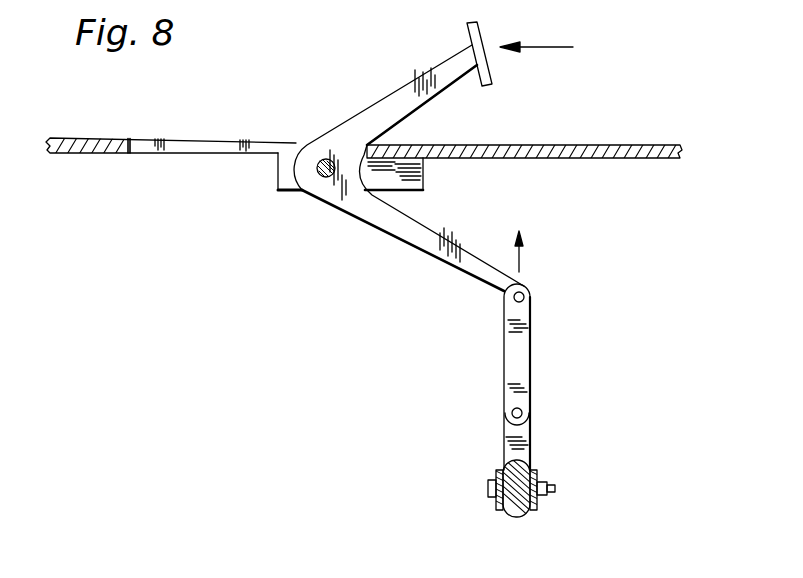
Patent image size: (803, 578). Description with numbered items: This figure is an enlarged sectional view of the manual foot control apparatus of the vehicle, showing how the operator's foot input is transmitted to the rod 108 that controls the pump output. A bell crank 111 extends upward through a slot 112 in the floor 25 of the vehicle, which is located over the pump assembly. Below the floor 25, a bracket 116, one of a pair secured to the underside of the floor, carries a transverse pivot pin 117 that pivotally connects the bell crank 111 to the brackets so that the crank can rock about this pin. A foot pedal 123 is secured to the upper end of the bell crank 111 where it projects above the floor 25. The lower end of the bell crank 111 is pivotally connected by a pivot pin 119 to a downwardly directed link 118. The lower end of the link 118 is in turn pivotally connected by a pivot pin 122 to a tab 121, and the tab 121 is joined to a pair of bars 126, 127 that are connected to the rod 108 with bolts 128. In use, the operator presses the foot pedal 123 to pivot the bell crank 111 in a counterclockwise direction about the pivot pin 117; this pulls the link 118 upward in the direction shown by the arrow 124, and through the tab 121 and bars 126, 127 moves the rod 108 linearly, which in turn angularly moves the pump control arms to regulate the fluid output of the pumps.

The floor 25 is at (603, 145).
The rod 108 is at (531, 463).
The bell crank 111 is at (372, 110).
The slot 112 is at (192, 140).
The bracket 116 is at (425, 178).
The transverse pivot pin 117 is at (322, 178).
The link 118 is at (518, 343).
The pivot pin 119 is at (527, 297).
The tab 121 is at (520, 440).
The pivot pin 122 is at (520, 408).
The foot pedal 123 is at (481, 32).
The arrow 124 is at (524, 262).
The bar 126 is at (546, 505).
The bar 127 is at (493, 510).
The bolt 128 is at (488, 487).